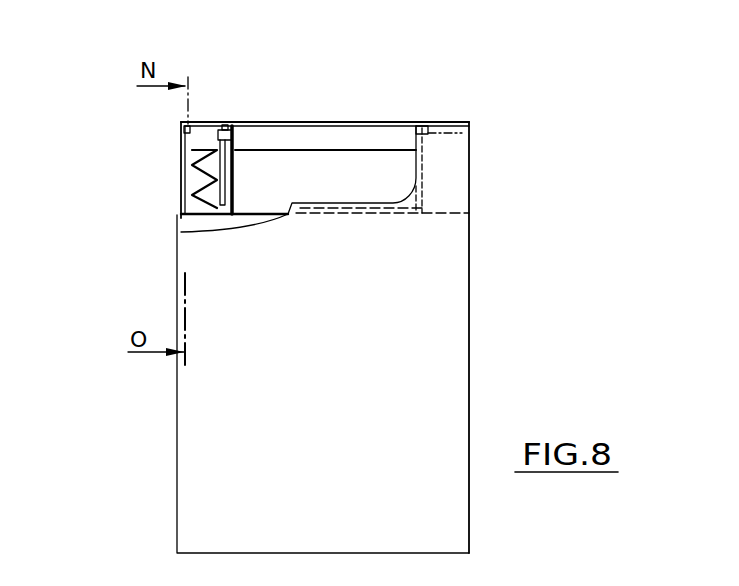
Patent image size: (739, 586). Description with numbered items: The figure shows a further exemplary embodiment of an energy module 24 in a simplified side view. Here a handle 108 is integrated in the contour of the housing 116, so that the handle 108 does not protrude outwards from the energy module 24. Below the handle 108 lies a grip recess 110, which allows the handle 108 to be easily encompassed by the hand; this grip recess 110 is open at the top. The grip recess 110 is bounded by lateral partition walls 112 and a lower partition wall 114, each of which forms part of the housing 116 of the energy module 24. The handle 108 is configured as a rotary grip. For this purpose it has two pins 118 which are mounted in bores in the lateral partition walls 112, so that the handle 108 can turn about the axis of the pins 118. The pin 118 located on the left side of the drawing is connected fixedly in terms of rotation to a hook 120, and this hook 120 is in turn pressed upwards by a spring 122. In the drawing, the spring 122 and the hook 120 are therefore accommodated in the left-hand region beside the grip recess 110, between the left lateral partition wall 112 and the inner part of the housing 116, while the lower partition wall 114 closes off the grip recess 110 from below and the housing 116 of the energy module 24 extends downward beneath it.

The energy module 24 is at (210, 425).
The handle 108 is at (380, 122).
The grip recess 110 is at (386, 180).
The lateral partition walls 112 is at (182, 220).
The lower partition wall 114 is at (217, 214).
The housing 116 is at (469, 330).
The pins 118 is at (184, 138).
The hook 120 is at (207, 174).
The spring 122 is at (220, 190).